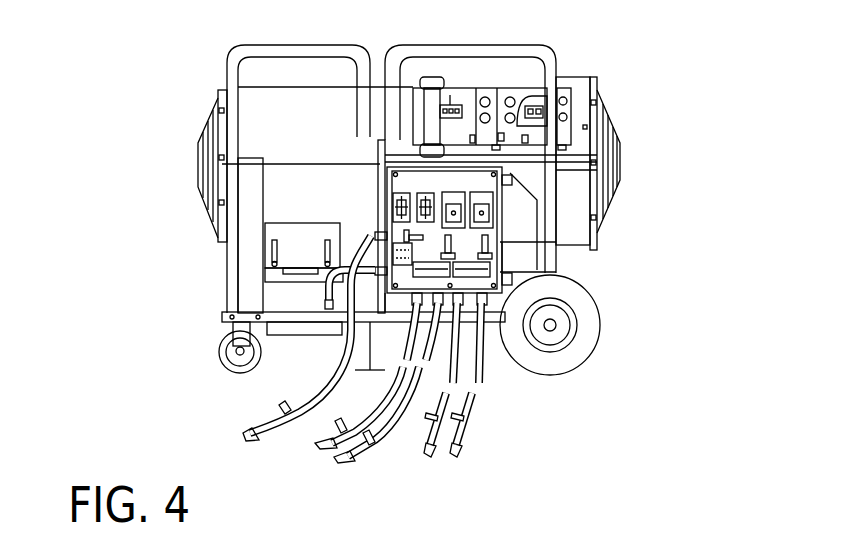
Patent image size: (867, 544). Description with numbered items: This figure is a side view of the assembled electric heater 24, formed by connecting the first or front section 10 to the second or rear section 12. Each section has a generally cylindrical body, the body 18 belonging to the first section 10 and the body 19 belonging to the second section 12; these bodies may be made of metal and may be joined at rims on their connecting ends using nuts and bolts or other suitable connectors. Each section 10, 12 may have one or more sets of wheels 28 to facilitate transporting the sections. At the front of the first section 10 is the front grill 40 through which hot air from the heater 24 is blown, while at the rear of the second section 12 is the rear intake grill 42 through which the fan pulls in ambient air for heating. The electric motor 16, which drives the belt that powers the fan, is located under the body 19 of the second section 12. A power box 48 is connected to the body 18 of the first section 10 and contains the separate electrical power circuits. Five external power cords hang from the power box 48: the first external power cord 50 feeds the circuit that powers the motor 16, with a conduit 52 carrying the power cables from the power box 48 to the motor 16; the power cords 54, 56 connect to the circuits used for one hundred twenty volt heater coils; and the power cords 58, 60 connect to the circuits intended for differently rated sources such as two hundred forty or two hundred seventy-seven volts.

The first section 10 is at (578, 62).
The second section 12 is at (186, 201).
The electric motor 16 is at (270, 288).
The body 18 is at (408, 97).
The body 19 is at (243, 128).
The electric heater 24 is at (174, 67).
The wheels 28 is at (577, 355).
The front grill 40 is at (620, 162).
The rear intake grill 42 is at (197, 175).
The power box 48 is at (499, 257).
The first external power cord 50 is at (242, 433).
The conduit 52 is at (328, 310).
The power cord 54 is at (305, 445).
The power cord 56 is at (338, 460).
The power cord 58 is at (425, 452).
The power cord 60 is at (460, 448).